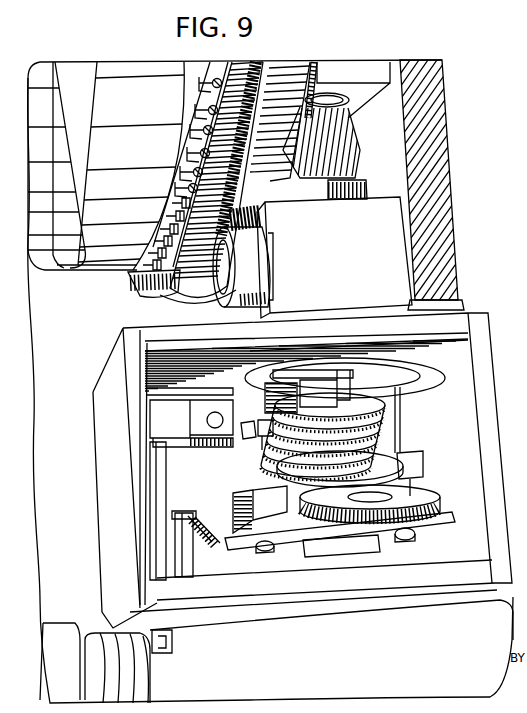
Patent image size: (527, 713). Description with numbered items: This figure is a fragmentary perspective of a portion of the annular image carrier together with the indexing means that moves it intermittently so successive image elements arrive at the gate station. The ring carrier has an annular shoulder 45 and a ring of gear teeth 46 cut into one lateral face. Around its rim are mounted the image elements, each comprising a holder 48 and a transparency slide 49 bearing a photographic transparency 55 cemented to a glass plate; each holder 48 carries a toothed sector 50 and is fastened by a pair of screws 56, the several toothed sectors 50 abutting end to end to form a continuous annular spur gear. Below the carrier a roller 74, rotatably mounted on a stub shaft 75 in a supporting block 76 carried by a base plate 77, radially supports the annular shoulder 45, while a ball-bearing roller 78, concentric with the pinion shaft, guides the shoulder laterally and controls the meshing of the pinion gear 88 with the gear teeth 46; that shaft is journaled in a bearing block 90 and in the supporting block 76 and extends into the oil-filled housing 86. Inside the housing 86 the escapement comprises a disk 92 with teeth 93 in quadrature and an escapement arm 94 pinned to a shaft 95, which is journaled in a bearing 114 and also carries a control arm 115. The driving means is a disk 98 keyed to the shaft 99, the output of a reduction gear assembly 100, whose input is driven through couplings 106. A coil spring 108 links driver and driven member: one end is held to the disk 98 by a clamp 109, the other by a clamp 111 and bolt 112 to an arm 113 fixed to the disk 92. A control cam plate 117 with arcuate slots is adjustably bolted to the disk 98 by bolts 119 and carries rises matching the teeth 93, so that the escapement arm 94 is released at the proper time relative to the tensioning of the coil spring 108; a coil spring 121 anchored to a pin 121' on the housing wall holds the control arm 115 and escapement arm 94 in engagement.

The annular shoulder 45 is at (292, 63).
The ring of gear teeth 46 is at (317, 63).
The holder 48 is at (227, 62).
The transparency slide 49 is at (105, 65).
The toothed sector 50 is at (157, 300).
The photographic transparency 55 is at (133, 82).
The screws 56 is at (128, 283).
The roller 74 is at (231, 291).
The stub shaft 75 is at (220, 278).
The supporting block 76 is at (394, 209).
The base plate 77 is at (446, 241).
The ball-bearing roller 78 is at (364, 181).
The housing 86 is at (492, 406).
The pinion gear 88 is at (348, 134).
The bearing block 90 is at (375, 62).
The disk 92 is at (415, 380).
The teeth 93 is at (337, 350).
The escapement arm 94 is at (145, 398).
The shaft 95 is at (156, 452).
The disk 98 is at (441, 505).
The shaft 99 is at (362, 553).
The reduction gear assembly 100 is at (321, 617).
The couplings 106 is at (97, 632).
The coil spring 108 is at (385, 407).
The clamp 109 is at (413, 455).
The clamp 111 is at (250, 433).
The bolt 112 is at (262, 438).
The arm 113 is at (263, 385).
The bearing 114 is at (177, 436).
The control arm 115 is at (222, 513).
The control cam plate 117 is at (255, 542).
The bolts 119 is at (416, 538).
The coil spring 121 is at (203, 515).
The pin 121' is at (132, 544).